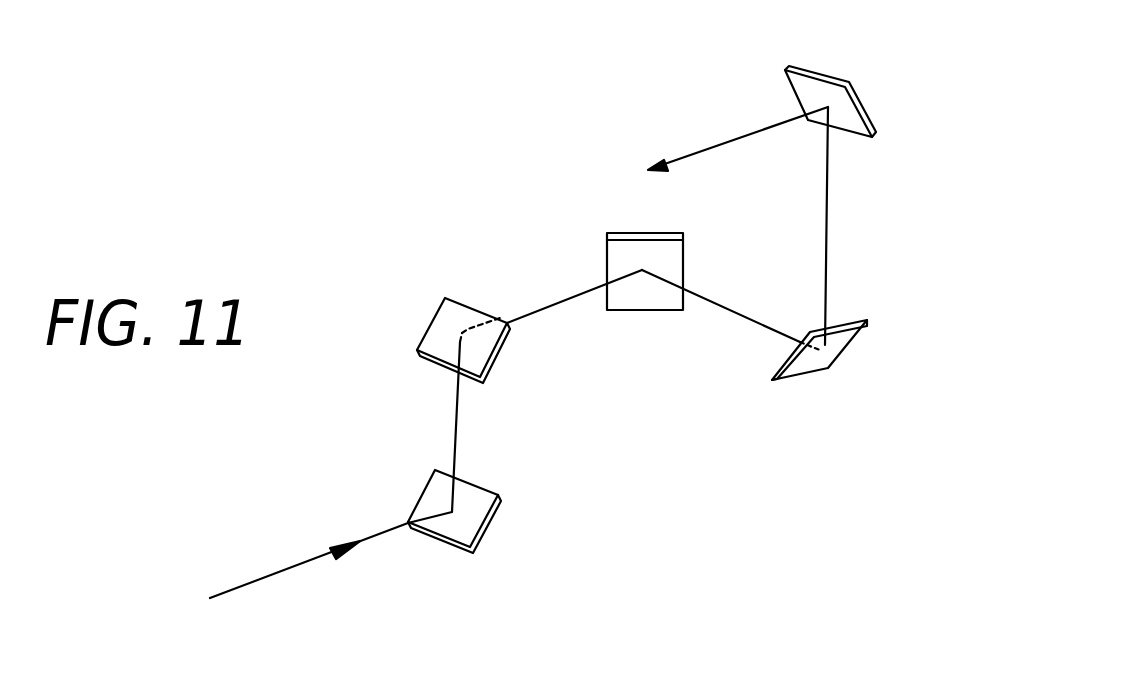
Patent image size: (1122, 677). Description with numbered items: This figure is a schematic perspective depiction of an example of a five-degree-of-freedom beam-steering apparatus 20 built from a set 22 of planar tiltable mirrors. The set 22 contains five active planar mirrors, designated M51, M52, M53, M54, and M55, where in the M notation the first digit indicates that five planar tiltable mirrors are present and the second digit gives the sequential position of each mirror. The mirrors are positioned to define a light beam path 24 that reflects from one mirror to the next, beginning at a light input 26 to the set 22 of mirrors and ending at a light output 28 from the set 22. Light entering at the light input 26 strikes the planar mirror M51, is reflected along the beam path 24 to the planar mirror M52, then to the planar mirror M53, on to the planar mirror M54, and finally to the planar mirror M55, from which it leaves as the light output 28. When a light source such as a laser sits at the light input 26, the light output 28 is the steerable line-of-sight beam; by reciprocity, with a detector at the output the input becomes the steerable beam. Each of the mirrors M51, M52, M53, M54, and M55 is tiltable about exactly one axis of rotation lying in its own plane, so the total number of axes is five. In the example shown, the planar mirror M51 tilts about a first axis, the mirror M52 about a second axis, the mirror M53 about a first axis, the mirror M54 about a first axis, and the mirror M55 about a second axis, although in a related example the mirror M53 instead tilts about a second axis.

The beam-steering apparatus 20 is at (507, 225).
The set of planar tiltable mirrors 22 is at (870, 103).
The light beam path 24 is at (457, 430).
The light input 26 is at (263, 578).
The light output 28 is at (732, 140).
The planar mirror M51 is at (454, 534).
The planar mirror M52 is at (529, 319).
The planar mirror M53 is at (699, 268).
The planar mirror M54 is at (819, 271).
The planar mirror M55 is at (830, 83).